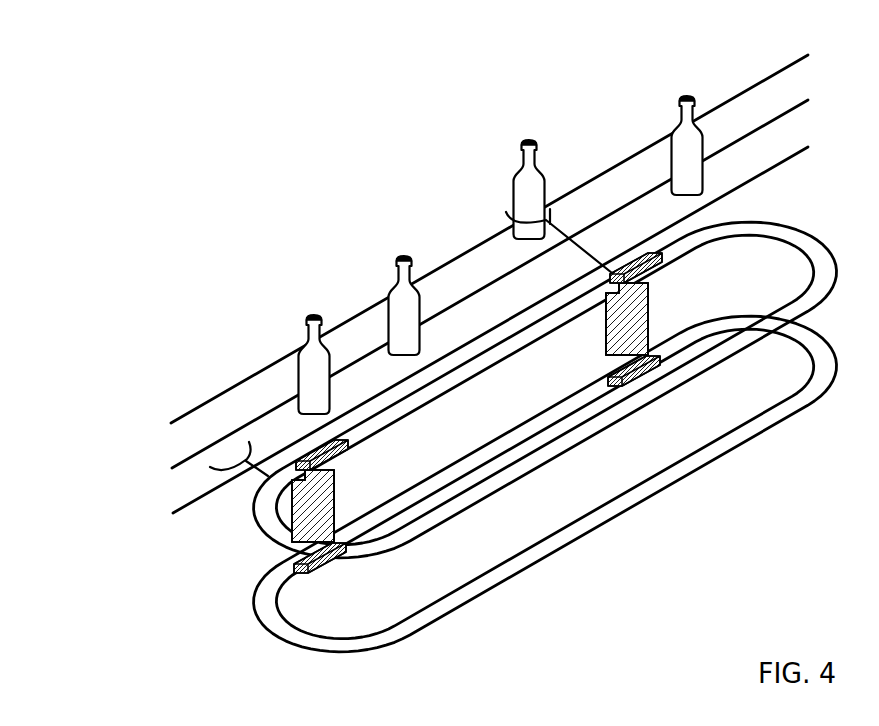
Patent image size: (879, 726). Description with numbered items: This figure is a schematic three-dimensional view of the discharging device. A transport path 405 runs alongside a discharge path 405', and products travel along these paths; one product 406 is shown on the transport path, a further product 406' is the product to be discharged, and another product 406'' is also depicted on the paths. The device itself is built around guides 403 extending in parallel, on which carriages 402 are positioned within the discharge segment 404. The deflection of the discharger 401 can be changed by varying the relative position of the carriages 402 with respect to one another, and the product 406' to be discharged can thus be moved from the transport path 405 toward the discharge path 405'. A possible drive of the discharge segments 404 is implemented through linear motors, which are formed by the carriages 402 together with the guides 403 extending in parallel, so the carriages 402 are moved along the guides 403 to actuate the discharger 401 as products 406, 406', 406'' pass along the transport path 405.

The discharger 401 is at (250, 475).
The carriage 402 is at (352, 447).
The guide 403 is at (488, 381).
The discharge segment 404 is at (352, 488).
The transport path 405 is at (460, 332).
The discharge path 405' is at (460, 263).
The container / bottle 406 is at (655, 145).
The product to be discharged 406' is at (328, 335).
The container / bottle 406'' is at (532, 206).